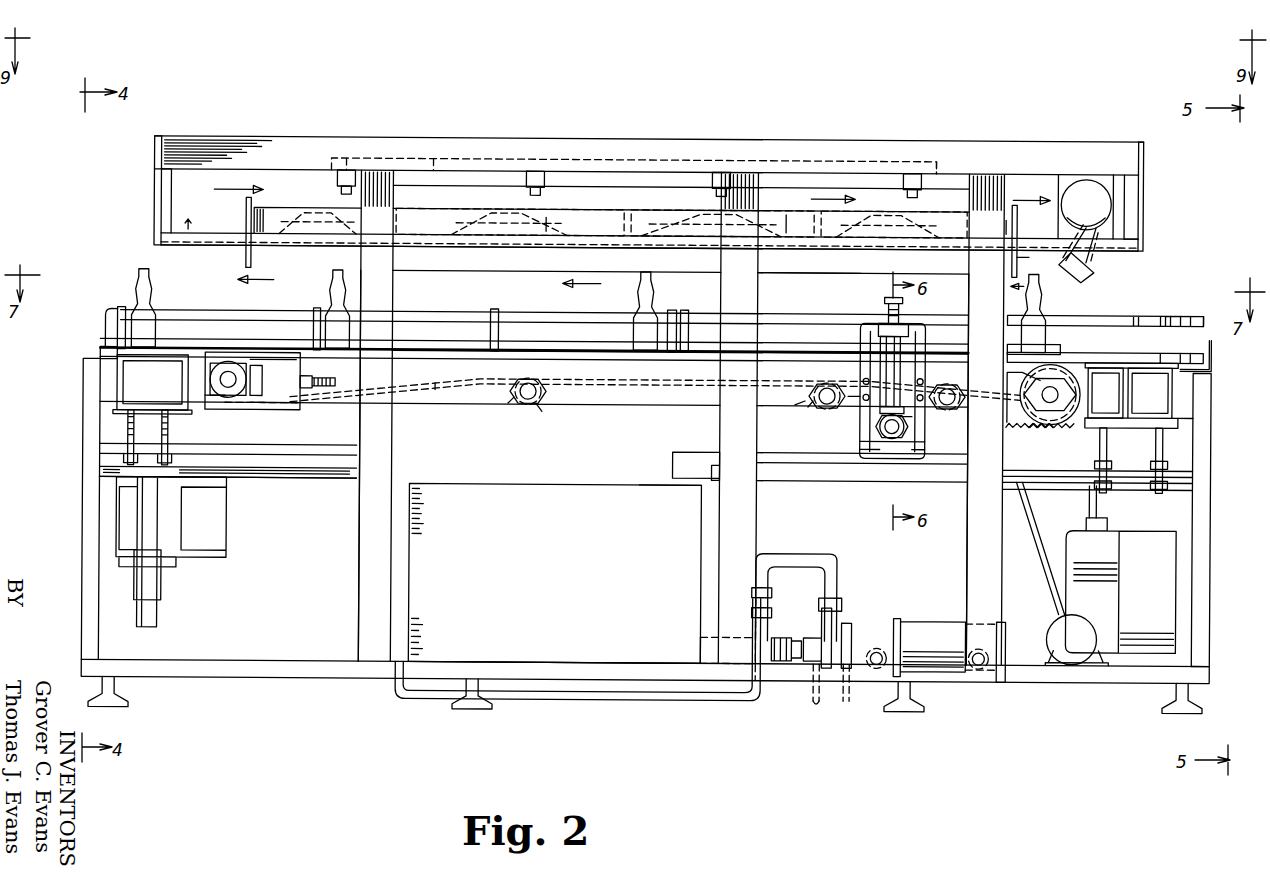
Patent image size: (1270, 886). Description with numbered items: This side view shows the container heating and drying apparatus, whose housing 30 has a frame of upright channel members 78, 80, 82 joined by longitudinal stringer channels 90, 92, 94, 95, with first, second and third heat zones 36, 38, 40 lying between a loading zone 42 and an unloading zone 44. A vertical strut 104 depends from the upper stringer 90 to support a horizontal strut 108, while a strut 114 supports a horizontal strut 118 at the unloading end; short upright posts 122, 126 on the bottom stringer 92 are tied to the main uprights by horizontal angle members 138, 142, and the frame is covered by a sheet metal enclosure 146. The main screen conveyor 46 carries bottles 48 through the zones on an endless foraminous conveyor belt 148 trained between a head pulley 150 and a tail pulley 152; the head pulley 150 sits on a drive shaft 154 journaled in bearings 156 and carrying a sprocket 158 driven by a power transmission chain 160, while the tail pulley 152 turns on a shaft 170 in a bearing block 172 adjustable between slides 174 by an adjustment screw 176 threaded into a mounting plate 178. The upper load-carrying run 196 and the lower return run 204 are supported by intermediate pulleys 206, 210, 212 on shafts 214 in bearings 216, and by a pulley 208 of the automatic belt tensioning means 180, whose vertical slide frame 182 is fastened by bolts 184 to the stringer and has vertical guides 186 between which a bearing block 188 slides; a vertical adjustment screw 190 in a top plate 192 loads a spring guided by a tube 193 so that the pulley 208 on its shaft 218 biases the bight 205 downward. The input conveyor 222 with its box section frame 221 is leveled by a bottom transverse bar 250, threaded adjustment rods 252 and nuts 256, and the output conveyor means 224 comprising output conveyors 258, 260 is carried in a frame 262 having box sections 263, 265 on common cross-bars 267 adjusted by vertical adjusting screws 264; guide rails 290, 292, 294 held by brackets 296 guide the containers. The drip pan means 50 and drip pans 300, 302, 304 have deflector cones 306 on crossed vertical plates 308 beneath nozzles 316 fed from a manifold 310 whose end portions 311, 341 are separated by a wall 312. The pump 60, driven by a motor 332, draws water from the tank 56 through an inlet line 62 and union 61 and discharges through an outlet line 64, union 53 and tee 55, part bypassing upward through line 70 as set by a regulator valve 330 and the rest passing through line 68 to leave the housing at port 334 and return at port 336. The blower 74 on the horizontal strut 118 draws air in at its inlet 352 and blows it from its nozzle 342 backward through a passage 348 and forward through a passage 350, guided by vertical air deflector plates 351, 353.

The housing 30 is at (278, 692).
The first heat zone 36 is at (375, 100).
The second heat zone 38 is at (673, 98).
The third heat zone 40 is at (908, 108).
The loading zone 42 is at (163, 102).
The unloading zone 44 is at (1150, 108).
The main screen conveyor 46 is at (560, 355).
The bottles 48 is at (155, 305).
The drip pan means 50 is at (296, 229).
The union 53 is at (838, 614).
The tee 55 is at (836, 600).
The tank 56 is at (564, 584).
The pump 60 is at (812, 680).
The union 61 is at (783, 636).
The inlet line 62 is at (706, 636).
The outlet line 64 is at (844, 604).
The line 68 is at (849, 680).
The line 70 is at (408, 545).
The blower 74 is at (1096, 212).
The upright channel member 78 is at (386, 584).
The upright channel member 80 is at (748, 584).
The upright channel member 82 is at (994, 588).
The longitudinal stringer channel 90 is at (806, 160).
The longitudinal stringer channel 92 is at (620, 664).
The longitudinal stringer channel 94 is at (692, 398).
The longitudinal stringer channel 95 is at (590, 264).
The vertical strut 104 is at (153, 188).
The horizontal strut 108 is at (153, 222).
The strut 114 is at (1130, 194).
The horizontal strut 118 is at (1128, 243).
The short upright post 122 is at (85, 520).
The short upright post 126 is at (1210, 604).
The horizontal angle member 138 is at (310, 480).
The horizontal angle member 142 is at (1064, 485).
The sheet metal enclosure 146 is at (153, 157).
The conveyor belt 148 is at (628, 388).
The head pulley 150 is at (1068, 420).
The tail pulley 152 is at (252, 410).
The drive shaft 154 is at (1052, 370).
The bearings 156 is at (1012, 370).
The sprocket 158 is at (1105, 430).
The power transmission chain 160 is at (1043, 568).
The shaft 170 is at (225, 370).
The bearing block 172 is at (218, 405).
The slides 174 is at (268, 362).
The adjustment screw 176 is at (312, 384).
The mounting plate 178 is at (296, 400).
The automatic belt tensioning means 180 is at (857, 309).
The vertical slide frame 182 is at (918, 457).
The bolts 184 is at (848, 402).
The vertical guides 186 is at (862, 450).
The bearing block 188 is at (888, 435).
The vertical adjustment screw 190 is at (872, 310).
The top plate 192 is at (898, 330).
The tube 193 is at (880, 356).
The upper load-carrying run 196 is at (420, 358).
The lower return run 204 is at (440, 384).
The bight 205 is at (864, 420).
The intermediate pulley 206 is at (1010, 438).
The pulley 208 is at (908, 420).
The intermediate pulley 210 is at (800, 402).
The intermediate pulley 212 is at (540, 408).
The shaft 214 is at (518, 406).
The bearings 216 is at (540, 392).
The shaft 218 is at (896, 440).
The box section frame 221 is at (160, 394).
The input conveyor 222 is at (93, 356).
The output conveyor means 224 is at (1212, 352).
The bottom transverse bar 250 is at (117, 410).
The threaded adjustment rods 252 is at (162, 440).
The nuts 256 is at (128, 472).
The output conveyor 258 is at (1115, 352).
The output conveyor 260 is at (1160, 352).
The frame 262 is at (1190, 402).
The box section 263 is at (1120, 399).
The vertical adjusting screws 264 is at (1165, 488).
The box section 265 is at (1164, 399).
The cross-bars 267 is at (1178, 420).
The guide rail 290 is at (117, 312).
The guide rail 292 is at (694, 318).
The guide rail 294 is at (1198, 313).
The brackets 296 is at (112, 333).
The drip pan 300 is at (510, 221).
The drip pan 302 is at (722, 223).
The drip pan 304 is at (860, 232).
The deflector cones 306 is at (335, 212).
The crossed vertical plates 308 is at (775, 224).
The manifold 310 is at (330, 172).
The end portion 311 is at (345, 160).
The wall 312 is at (432, 170).
The nozzle 316 is at (338, 190).
The regulator valve 330 is at (774, 594).
The motor 332 is at (948, 643).
The port 334 is at (882, 666).
The port 336 is at (982, 668).
The end portion 341 is at (603, 160).
The nozzle 342 is at (1080, 270).
The passage 348 is at (796, 300).
The passage 350 is at (608, 208).
The air deflector plate 351 is at (1016, 262).
The blower inlet 352 is at (1066, 214).
The air deflector plate 353 is at (244, 222).